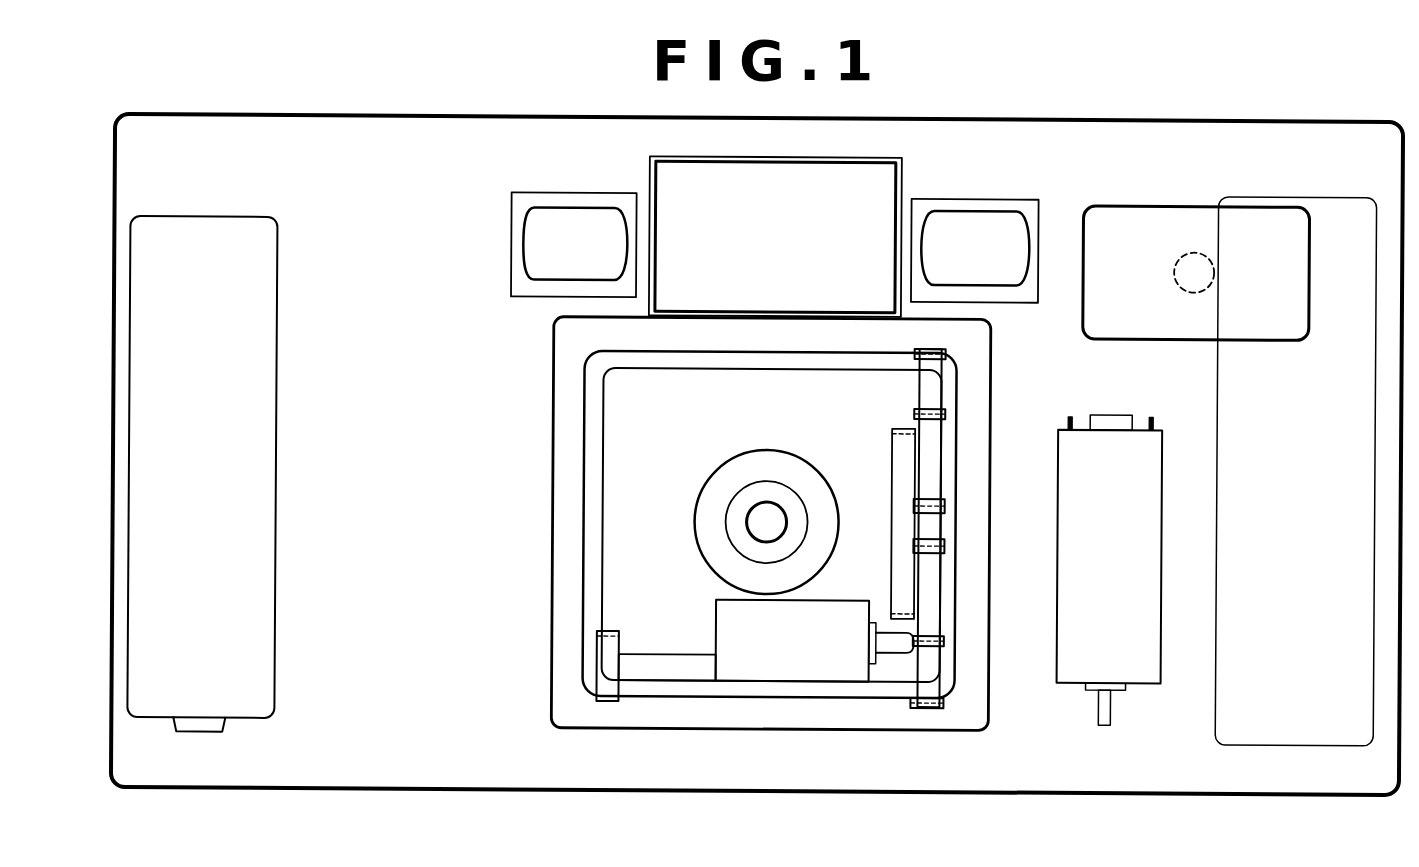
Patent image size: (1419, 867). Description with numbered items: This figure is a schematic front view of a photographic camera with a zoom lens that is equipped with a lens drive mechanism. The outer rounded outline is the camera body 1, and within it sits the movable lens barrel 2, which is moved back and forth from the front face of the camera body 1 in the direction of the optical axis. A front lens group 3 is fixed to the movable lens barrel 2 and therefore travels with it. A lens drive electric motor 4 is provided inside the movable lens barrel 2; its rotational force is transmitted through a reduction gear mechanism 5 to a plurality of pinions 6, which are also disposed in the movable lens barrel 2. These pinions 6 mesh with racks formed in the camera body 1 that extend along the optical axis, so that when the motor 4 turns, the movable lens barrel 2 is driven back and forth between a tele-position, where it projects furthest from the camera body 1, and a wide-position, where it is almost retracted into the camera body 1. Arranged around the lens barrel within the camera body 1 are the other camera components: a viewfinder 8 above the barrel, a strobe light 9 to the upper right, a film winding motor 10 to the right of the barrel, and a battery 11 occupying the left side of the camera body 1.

The camera body 1 is at (1221, 123).
The movable lens barrel 2 is at (584, 398).
The front lens group 3 is at (752, 505).
The lens drive electric motor 4 is at (740, 620).
The reduction gear mechanism 5 is at (945, 492).
The pinions 6 is at (617, 633).
The viewfinder 8 is at (873, 185).
The strobe light 9 is at (1124, 226).
The film winding motor 10 is at (1140, 672).
The battery 11 is at (242, 355).